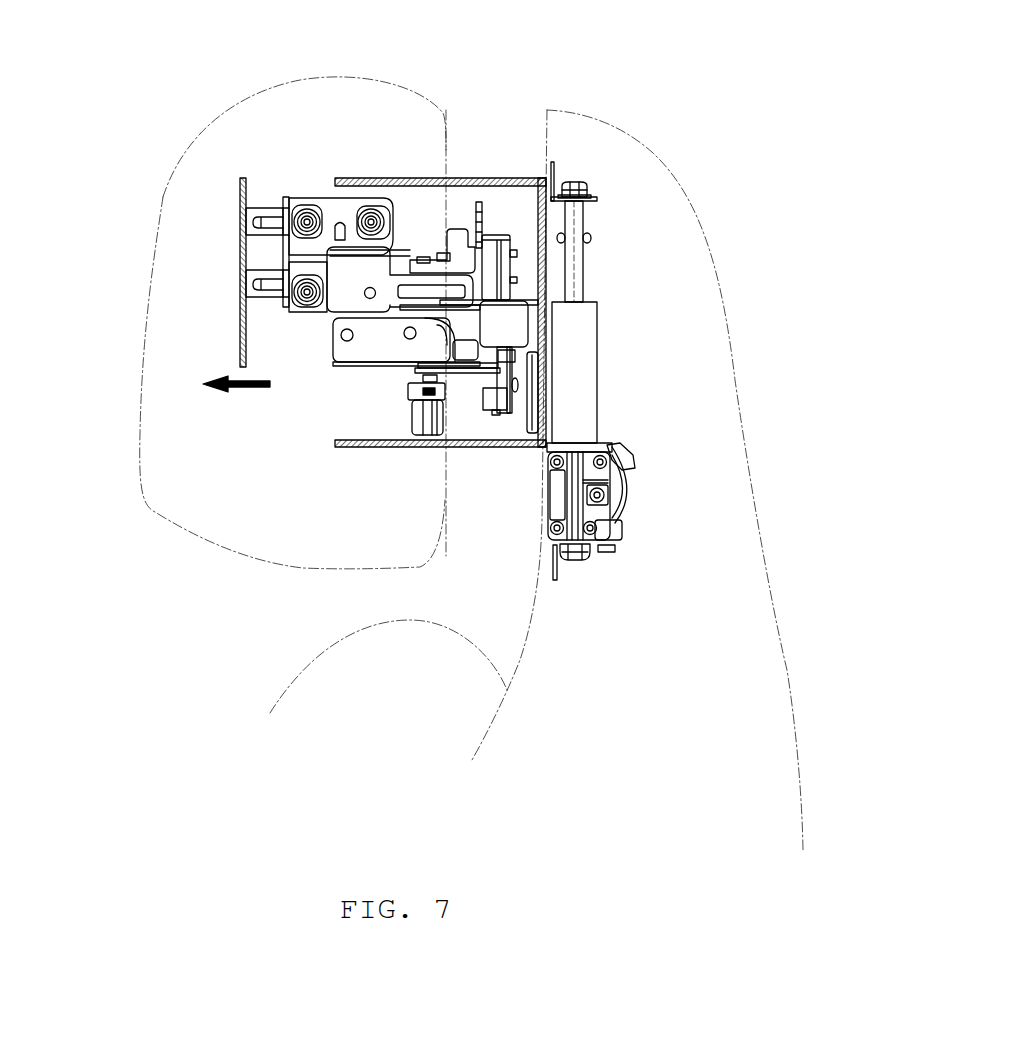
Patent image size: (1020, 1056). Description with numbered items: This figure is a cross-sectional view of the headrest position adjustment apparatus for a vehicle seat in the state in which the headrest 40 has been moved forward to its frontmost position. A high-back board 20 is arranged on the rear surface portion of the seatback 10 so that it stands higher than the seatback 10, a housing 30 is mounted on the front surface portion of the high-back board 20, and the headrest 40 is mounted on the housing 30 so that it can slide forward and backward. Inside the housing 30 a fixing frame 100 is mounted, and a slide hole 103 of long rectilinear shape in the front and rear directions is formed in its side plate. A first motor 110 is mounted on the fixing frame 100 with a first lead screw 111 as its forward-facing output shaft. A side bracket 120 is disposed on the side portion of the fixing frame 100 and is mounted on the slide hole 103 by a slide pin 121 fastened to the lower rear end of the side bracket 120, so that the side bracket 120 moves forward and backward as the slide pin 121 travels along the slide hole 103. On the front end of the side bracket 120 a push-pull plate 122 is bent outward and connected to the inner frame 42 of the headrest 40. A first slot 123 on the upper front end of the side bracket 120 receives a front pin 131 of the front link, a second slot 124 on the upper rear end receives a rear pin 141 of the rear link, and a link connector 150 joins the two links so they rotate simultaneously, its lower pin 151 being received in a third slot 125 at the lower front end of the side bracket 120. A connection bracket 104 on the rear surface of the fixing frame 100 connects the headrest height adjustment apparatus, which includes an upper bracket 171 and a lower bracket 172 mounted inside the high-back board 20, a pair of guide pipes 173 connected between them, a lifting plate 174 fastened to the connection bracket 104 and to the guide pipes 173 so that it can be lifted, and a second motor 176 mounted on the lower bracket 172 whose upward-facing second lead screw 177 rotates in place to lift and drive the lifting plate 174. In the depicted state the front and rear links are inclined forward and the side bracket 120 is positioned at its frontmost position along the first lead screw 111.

The seatback 10 is at (307, 670).
The high-back board 20 is at (630, 142).
The housing 30 is at (530, 183).
The headrest 40 is at (140, 394).
The inner frame 42 is at (238, 198).
The fixing frame 100 is at (512, 205).
The slide hole 103 is at (388, 313).
The connection bracket 104 is at (541, 338).
The first motor 110 is at (460, 240).
The first lead screw 111 is at (441, 222).
The side bracket 120 is at (360, 198).
The slide pin 121 is at (370, 300).
The push-pull plate 122 is at (283, 198).
The first slot 123 is at (298, 210).
The second slot 124 is at (372, 214).
The third slot 125 is at (306, 297).
The front pin 131 is at (298, 211).
The rear pin 141 is at (405, 265).
The link connector 150 is at (343, 197).
The lower pin 151 is at (303, 300).
The upper bracket 171 is at (597, 199).
The lower bracket 172 is at (557, 575).
The guide pipes 173 is at (585, 238).
The lifting plate 174 is at (590, 412).
The second motor 176 is at (602, 477).
The second lead screw 177 is at (578, 297).